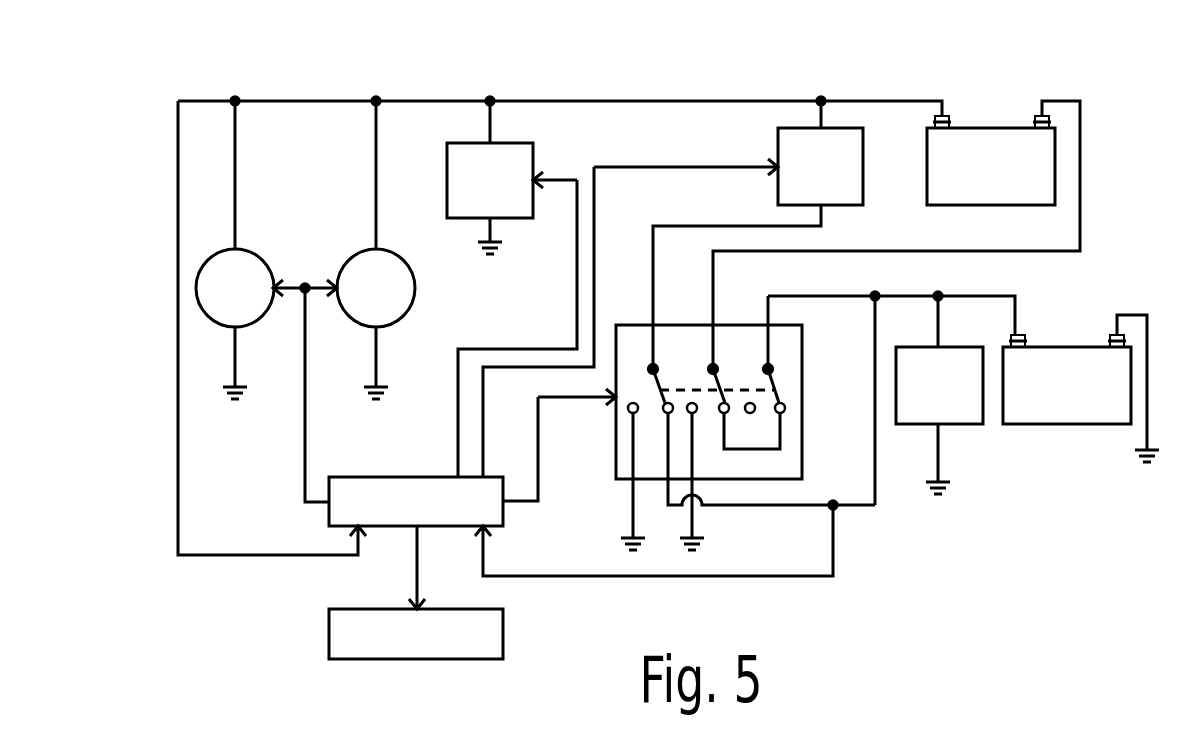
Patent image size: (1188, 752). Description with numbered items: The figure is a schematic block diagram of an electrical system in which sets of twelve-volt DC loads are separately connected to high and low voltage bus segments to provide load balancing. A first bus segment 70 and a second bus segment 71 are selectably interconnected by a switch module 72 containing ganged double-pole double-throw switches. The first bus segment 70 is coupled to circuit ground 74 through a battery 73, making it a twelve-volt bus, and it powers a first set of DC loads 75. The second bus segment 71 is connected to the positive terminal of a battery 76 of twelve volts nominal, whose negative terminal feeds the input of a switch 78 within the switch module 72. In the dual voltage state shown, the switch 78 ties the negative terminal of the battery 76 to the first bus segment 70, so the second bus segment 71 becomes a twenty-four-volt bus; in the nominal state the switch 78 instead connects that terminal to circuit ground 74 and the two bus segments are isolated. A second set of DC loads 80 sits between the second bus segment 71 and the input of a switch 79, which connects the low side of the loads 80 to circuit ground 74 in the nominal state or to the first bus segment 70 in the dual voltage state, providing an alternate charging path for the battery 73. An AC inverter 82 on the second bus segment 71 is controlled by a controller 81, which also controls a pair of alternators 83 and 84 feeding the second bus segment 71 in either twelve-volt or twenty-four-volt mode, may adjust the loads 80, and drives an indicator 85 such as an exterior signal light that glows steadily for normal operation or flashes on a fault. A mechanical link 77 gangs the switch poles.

The first bus segment 70 is at (1002, 296).
The second bus segment 71 is at (682, 101).
The switch module 72 is at (733, 368).
The battery 73 is at (1030, 424).
The circuit ground 74 is at (240, 387).
The first set of DC loads 75 is at (912, 424).
The battery 76 is at (1002, 128).
The switch actuator linkage 77 is at (792, 389).
The switch 78 is at (738, 373).
The switch 79 is at (678, 373).
The second set of DC loads 80 is at (778, 140).
The controller 81 is at (370, 477).
The AC inverter 82 is at (523, 143).
The alternator 83 is at (355, 253).
The alternator 84 is at (250, 249).
The indicator 85 is at (337, 609).